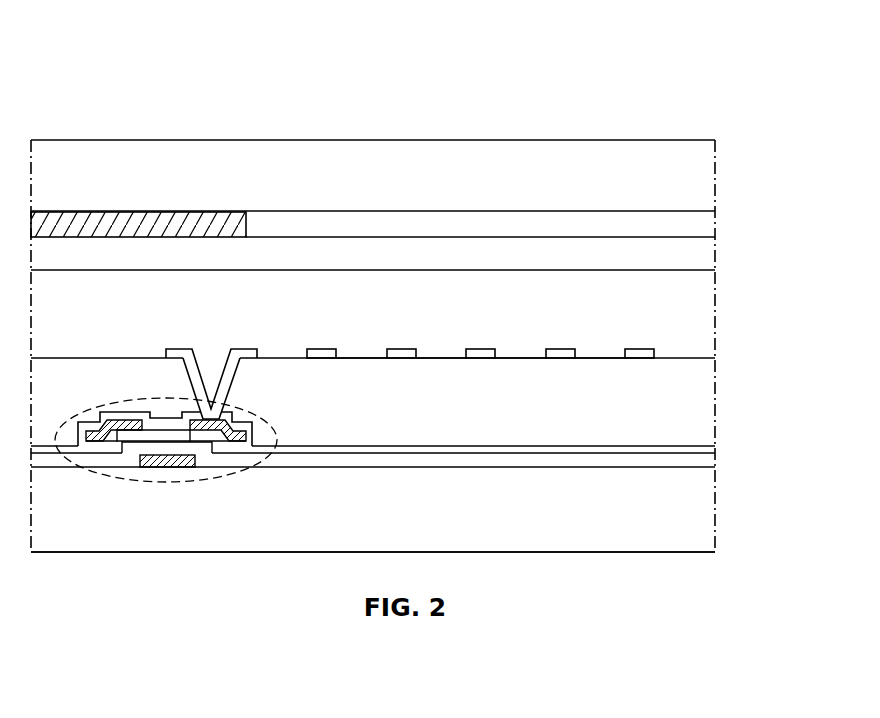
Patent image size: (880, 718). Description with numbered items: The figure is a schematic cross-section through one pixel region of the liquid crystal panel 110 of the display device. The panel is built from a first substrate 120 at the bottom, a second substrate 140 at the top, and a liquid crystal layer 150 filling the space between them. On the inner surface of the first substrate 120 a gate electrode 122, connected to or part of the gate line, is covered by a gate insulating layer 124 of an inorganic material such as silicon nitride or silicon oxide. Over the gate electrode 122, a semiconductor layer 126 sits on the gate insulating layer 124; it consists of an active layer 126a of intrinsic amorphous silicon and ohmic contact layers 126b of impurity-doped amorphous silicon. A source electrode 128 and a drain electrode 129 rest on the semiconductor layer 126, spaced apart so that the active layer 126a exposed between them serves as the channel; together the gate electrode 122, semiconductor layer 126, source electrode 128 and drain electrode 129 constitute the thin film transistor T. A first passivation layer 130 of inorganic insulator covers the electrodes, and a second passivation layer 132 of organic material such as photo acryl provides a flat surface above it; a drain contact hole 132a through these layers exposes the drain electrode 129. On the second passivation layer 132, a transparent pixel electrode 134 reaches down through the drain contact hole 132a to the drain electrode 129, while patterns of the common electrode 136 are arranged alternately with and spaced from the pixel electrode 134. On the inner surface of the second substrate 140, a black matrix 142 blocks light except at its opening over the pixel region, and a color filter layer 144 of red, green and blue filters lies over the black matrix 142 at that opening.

The liquid crystal panel 110 is at (664, 78).
The first substrate 120 is at (684, 520).
The gate electrode 122 is at (162, 463).
The gate insulating layer 124 is at (403, 460).
The semiconductor layer 126 is at (231, 529).
The active layer 126a is at (215, 448).
The ohmic contact layers 126b is at (246, 446).
The source electrode 128 is at (100, 446).
The drain electrode 129 is at (263, 444).
The first passivation layer 130 is at (457, 449).
The second passivation layer 132 is at (515, 428).
The drain contact hole 132a is at (211, 370).
The pixel electrode 134 is at (244, 348).
The common electrode 136 is at (324, 349).
The second substrate 140 is at (684, 185).
The black matrix 142 is at (143, 223).
The color filter layer 144 is at (423, 225).
The liquid crystal layer 150 is at (695, 322).
The thin film transistor T is at (80, 478).